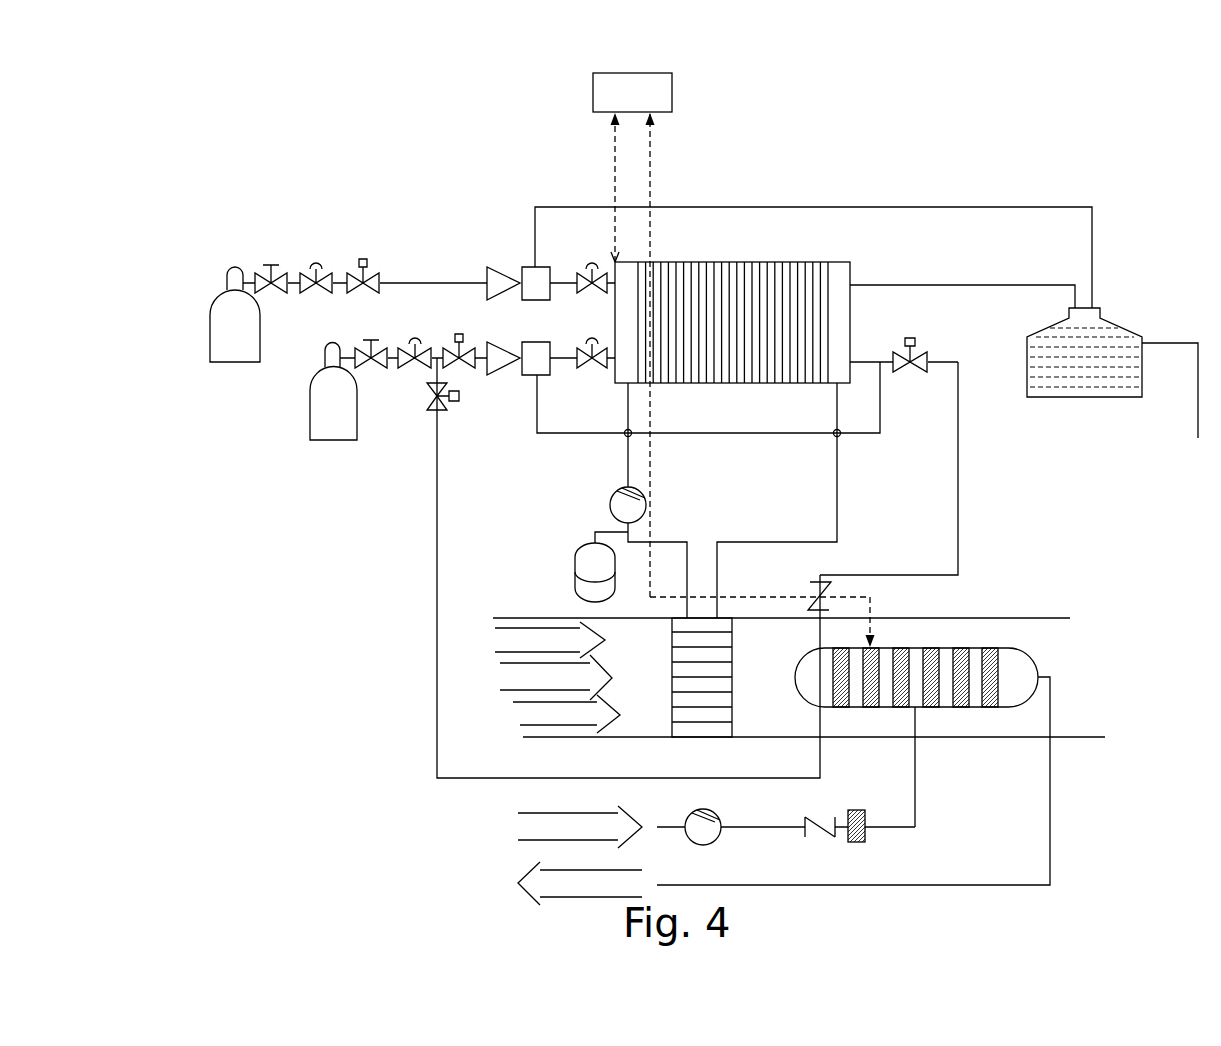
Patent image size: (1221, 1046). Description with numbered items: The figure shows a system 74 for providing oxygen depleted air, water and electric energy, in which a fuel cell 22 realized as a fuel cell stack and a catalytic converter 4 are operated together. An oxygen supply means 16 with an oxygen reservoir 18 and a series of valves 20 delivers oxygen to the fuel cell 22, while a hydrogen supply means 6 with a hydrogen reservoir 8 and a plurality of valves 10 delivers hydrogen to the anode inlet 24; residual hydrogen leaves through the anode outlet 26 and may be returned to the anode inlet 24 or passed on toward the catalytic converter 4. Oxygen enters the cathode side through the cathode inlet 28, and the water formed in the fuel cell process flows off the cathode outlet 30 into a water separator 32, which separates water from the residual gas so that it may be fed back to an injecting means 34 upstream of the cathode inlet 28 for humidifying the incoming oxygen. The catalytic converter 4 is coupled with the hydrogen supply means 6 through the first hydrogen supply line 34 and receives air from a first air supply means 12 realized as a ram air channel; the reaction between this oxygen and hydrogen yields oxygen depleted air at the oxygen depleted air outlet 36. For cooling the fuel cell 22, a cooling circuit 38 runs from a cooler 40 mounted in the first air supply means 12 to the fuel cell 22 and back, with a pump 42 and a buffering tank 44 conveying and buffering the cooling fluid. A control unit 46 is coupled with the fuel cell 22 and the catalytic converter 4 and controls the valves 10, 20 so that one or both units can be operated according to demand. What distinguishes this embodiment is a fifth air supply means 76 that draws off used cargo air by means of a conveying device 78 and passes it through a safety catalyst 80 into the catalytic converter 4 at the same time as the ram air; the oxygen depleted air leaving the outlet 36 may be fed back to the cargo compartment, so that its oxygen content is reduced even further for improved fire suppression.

The catalytic converter 4 is at (1032, 606).
The hydrogen supply means 6 is at (362, 490).
The hydrogen reservoir 8 is at (318, 421).
The plurality of valves 10 is at (403, 384).
The first air supply means 12 is at (535, 752).
The oxygen supply means 16 is at (274, 205).
The oxygen reservoir 18 is at (218, 326).
The series of valves 20 is at (322, 256).
The fuel cell 22 is at (787, 268).
The anode inlet 24 is at (605, 375).
The anode outlet 26 is at (858, 350).
The cathode inlet 28 is at (603, 300).
The cathode outlet 30 is at (858, 272).
The water separator 32 is at (1110, 340).
The first hydrogen supply line 34 is at (532, 282).
The oxygen depleted air outlet 36 is at (1040, 677).
The cooling circuit 38 is at (850, 492).
The cooler 40 is at (728, 686).
The pump 42 is at (625, 510).
The buffering tank 44 is at (587, 587).
The control unit 46 is at (668, 96).
The system 74 is at (925, 180).
The fifth air supply means 76 is at (545, 845).
The conveying device 78 is at (710, 828).
The safety catalyst 80 is at (858, 812).